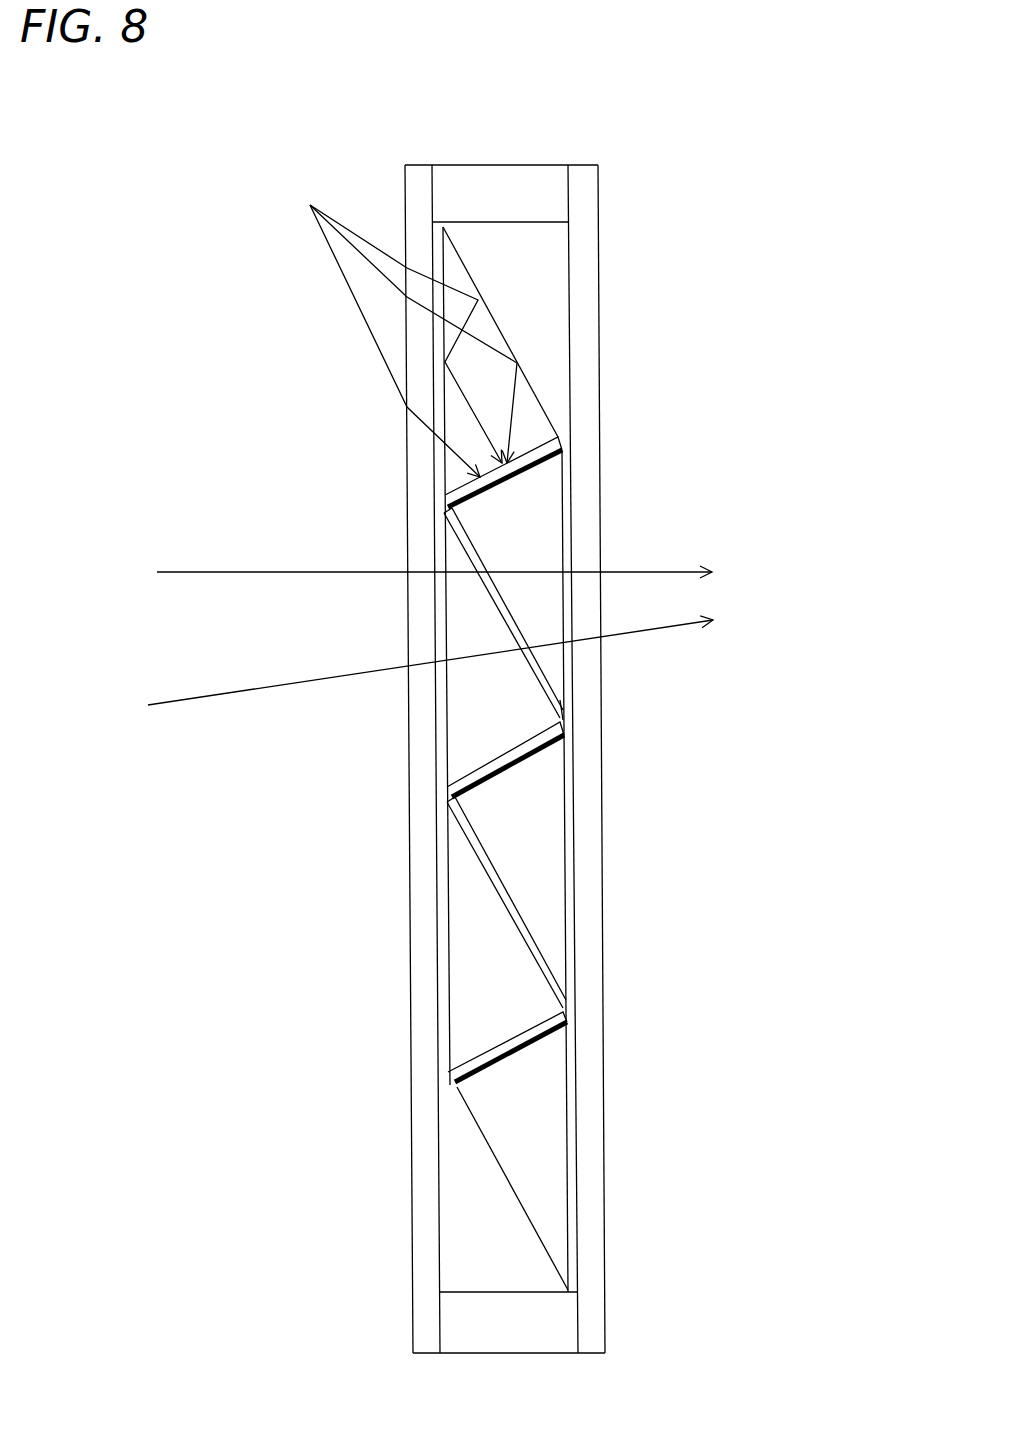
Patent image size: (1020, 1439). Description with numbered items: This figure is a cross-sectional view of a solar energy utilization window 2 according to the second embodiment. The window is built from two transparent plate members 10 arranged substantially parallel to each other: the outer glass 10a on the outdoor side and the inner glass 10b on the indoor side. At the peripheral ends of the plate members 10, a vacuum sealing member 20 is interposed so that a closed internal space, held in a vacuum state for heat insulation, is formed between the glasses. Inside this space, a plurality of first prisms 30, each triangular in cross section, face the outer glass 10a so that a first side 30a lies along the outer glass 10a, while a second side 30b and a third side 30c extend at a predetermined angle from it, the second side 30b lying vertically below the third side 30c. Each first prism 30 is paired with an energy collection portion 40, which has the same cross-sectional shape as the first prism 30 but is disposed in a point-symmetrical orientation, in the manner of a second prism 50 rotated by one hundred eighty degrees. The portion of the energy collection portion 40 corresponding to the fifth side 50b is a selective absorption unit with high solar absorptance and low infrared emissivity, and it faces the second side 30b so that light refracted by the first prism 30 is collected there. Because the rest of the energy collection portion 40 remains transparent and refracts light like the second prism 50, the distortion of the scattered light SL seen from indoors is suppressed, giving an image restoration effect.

The solar energy utilization window 2 is at (710, 123).
The plate members 10 is at (505, 745).
The outer glass 10a is at (408, 210).
The inner glass 10b is at (583, 207).
The vacuum sealing member 20 is at (535, 185).
The first prism 30 is at (492, 759).
The first side 30a is at (455, 725).
The second side 30b is at (567, 720).
The third side 30c is at (565, 665).
The energy collection portion 40 is at (562, 470).
The second prism 50 is at (494, 899).
The fifth side 50b is at (447, 517).
The scattered light SL is at (260, 572).